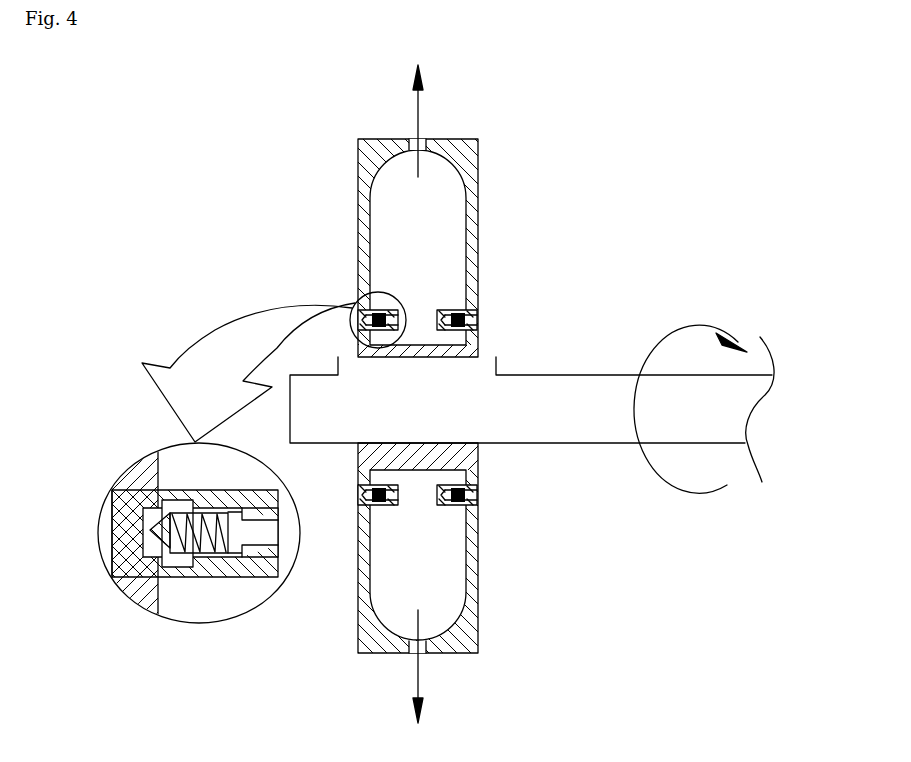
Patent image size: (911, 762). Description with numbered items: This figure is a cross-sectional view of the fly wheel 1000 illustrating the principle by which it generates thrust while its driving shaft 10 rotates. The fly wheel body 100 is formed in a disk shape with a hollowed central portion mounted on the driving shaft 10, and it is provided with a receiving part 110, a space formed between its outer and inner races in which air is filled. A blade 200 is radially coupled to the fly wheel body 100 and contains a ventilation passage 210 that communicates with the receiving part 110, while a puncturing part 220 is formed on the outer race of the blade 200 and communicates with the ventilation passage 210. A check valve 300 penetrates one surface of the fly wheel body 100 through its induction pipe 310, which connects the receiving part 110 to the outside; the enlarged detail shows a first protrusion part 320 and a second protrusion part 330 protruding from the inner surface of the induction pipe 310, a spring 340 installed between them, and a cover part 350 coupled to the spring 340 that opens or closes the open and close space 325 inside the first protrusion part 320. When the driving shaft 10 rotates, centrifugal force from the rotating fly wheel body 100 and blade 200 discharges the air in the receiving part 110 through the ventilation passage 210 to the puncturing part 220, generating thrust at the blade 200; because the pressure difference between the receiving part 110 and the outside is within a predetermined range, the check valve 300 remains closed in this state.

The driving shaft 10 is at (548, 427).
The fly wheel body 100 is at (330, 251).
The receiving part 110 is at (418, 262).
The blade 200 is at (330, 166).
The ventilation passage 210 is at (405, 186).
The puncturing part 220 is at (413, 142).
The check valve 300 is at (500, 322).
The induction pipe 310 is at (233, 496).
The first protrusion part 320 is at (145, 512).
The open and close space 325 is at (150, 530).
The second protrusion part 330 is at (242, 517).
The spring 340 is at (228, 558).
The cover part 350 is at (150, 556).
The fly wheel 1000 is at (575, 185).